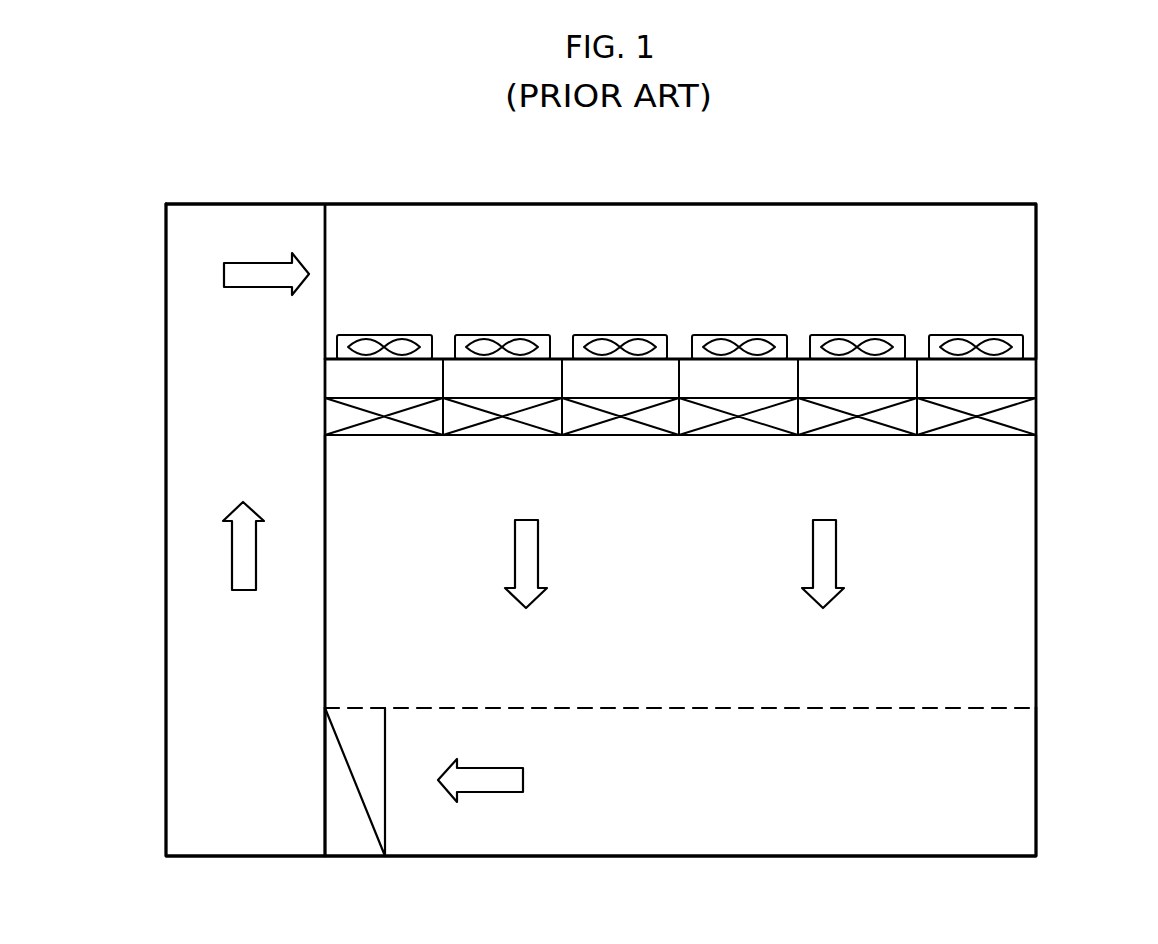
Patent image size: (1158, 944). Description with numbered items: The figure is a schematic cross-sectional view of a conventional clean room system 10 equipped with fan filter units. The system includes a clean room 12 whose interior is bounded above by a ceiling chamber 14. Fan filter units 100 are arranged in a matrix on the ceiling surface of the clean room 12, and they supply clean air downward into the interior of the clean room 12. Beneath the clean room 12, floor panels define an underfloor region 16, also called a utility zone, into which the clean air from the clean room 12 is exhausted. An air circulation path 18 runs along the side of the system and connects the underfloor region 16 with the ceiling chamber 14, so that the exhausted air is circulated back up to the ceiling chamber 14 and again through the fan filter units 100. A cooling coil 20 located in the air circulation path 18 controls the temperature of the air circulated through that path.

The clean room system 10 is at (637, 177).
The ceiling chamber 14 is at (1018, 269).
The fan filter units 100 is at (1018, 387).
The clean room 12 is at (1018, 594).
The underfloor region 16 is at (1018, 784).
The air circulation path 18 is at (180, 658).
The cooling coil 20 is at (336, 830).